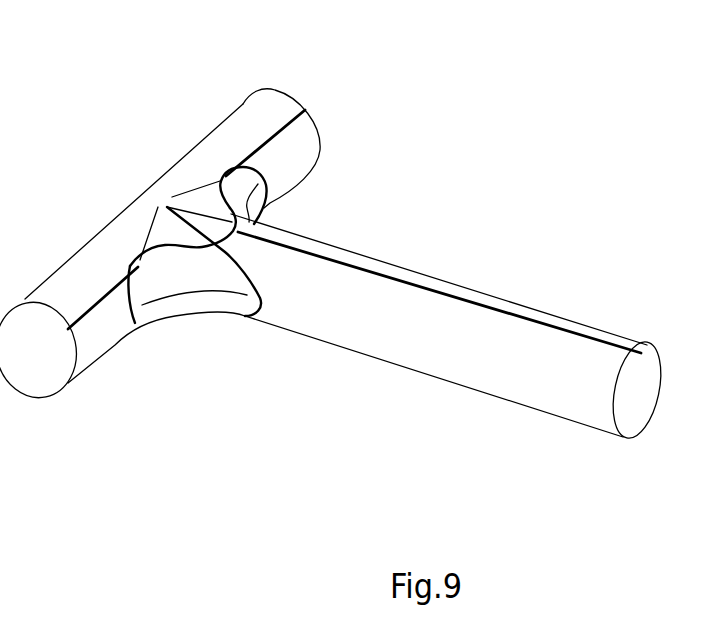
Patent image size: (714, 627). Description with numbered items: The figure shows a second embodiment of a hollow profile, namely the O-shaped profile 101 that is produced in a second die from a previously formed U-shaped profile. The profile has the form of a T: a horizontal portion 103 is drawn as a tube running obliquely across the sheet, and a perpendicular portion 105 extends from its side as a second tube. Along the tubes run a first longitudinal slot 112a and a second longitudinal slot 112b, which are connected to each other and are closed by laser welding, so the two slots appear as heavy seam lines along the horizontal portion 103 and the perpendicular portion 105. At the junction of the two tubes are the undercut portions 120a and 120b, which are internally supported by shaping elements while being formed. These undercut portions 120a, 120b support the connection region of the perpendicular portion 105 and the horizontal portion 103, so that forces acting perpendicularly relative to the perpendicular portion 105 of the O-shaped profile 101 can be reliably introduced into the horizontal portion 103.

The O-shaped profile 101 is at (306, 402).
The horizontal portion 103 is at (193, 117).
The perpendicular portion 105 is at (473, 400).
The first longitudinal slot 112a is at (100, 298).
The second longitudinal slot 112b is at (518, 316).
The undercut portion 120a is at (182, 280).
The undercut portion 120b is at (240, 203).